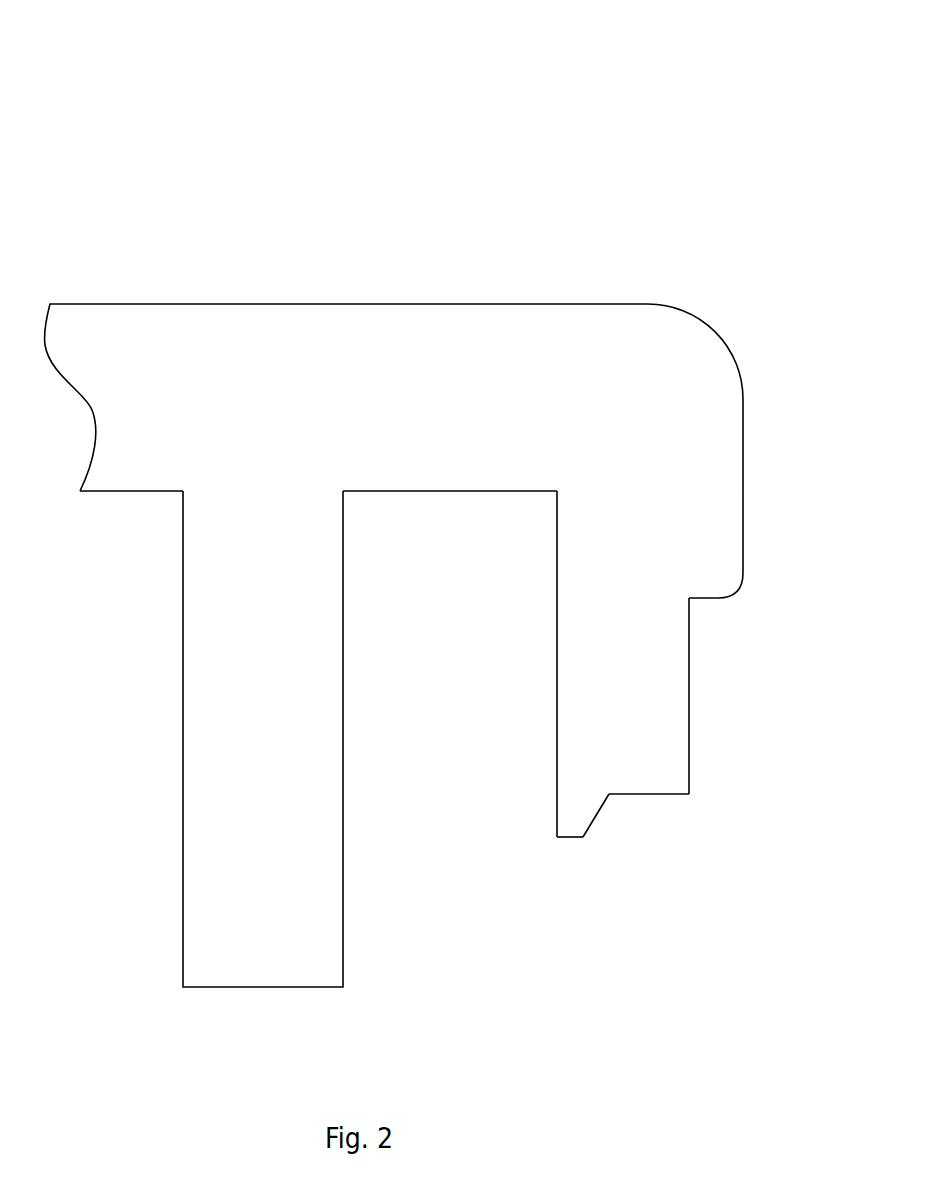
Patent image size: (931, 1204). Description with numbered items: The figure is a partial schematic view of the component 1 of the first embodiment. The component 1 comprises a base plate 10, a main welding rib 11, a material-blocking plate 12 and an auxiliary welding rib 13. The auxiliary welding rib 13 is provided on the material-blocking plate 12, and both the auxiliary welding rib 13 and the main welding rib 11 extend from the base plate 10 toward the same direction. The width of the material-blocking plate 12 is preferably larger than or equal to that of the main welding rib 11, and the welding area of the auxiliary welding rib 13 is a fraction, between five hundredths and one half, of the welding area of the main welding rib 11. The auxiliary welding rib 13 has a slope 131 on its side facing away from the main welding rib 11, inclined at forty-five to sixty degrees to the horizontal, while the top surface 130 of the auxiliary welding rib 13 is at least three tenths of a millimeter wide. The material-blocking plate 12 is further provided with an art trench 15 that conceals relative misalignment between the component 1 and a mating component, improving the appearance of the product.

The component 1 is at (320, 145).
The base plate 10 is at (483, 358).
The main welding rib 11 is at (225, 802).
The material-blocking plate 12 is at (590, 674).
The auxiliary welding rib 13 is at (573, 809).
The top surface 130 is at (570, 838).
The slope 131 is at (592, 825).
The art trench 15 is at (689, 682).